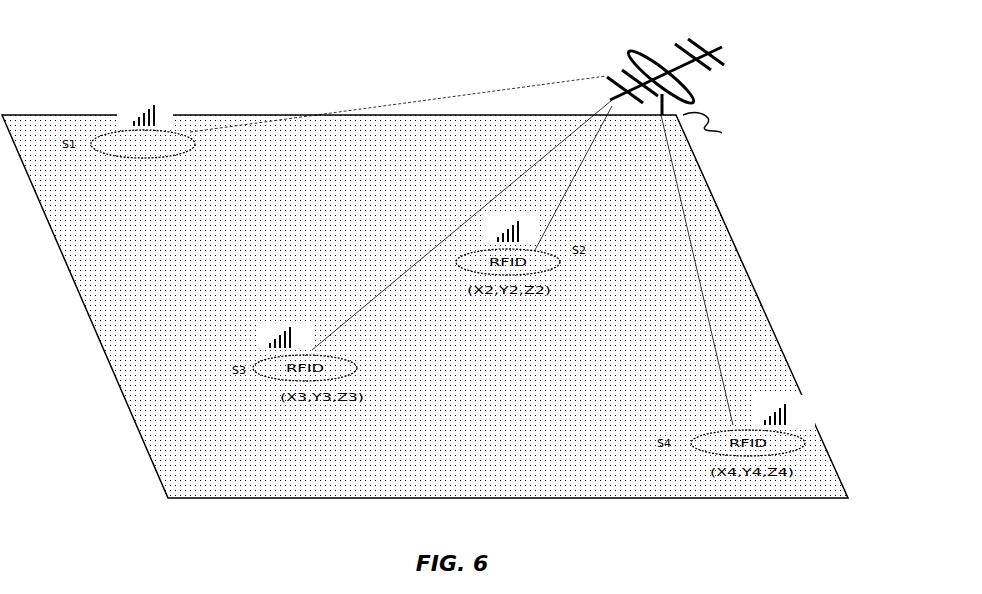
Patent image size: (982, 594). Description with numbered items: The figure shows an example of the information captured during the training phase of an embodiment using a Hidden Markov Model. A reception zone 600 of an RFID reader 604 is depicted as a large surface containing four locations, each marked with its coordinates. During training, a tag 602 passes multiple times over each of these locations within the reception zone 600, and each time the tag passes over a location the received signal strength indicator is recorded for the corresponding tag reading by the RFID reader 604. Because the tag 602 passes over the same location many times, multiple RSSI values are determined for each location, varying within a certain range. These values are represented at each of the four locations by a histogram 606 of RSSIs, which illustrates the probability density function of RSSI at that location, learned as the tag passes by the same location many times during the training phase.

The reception zone 600 is at (200, 483).
The tag 602 is at (190, 138).
The RFID reader 604 is at (720, 62).
The histogram 606 is at (142, 106).